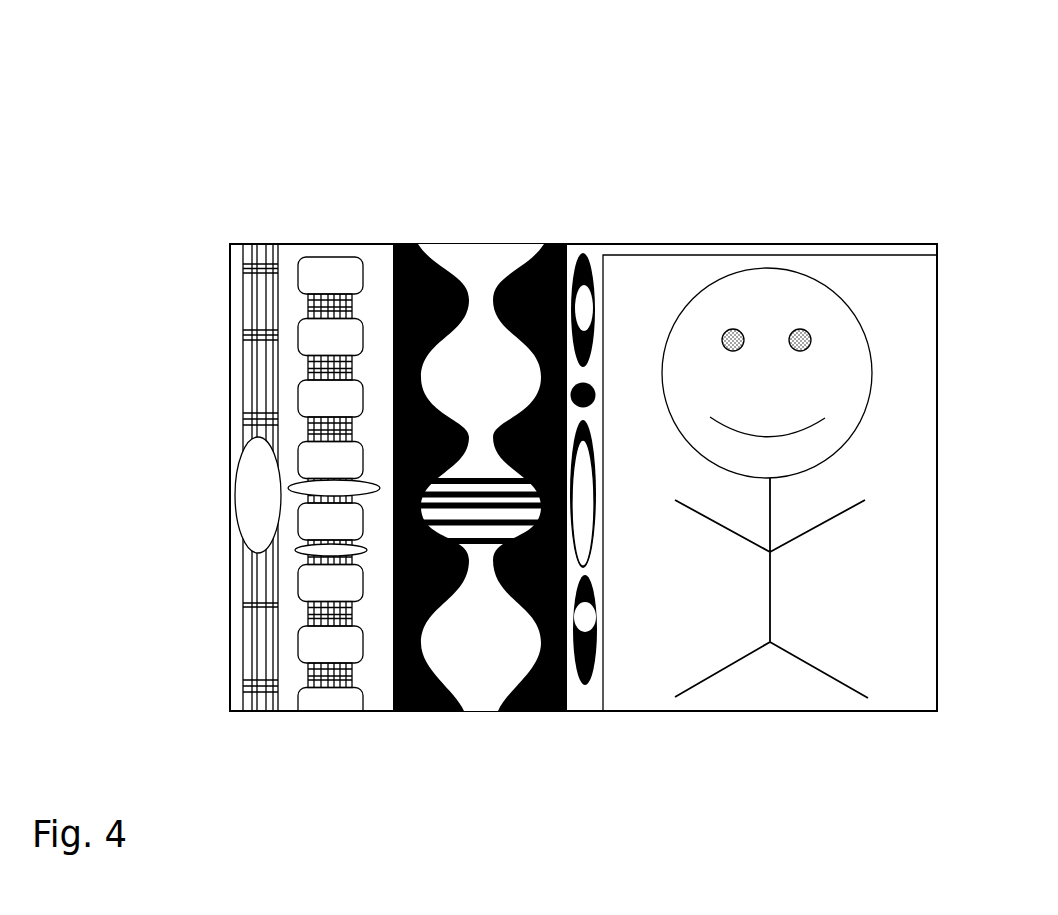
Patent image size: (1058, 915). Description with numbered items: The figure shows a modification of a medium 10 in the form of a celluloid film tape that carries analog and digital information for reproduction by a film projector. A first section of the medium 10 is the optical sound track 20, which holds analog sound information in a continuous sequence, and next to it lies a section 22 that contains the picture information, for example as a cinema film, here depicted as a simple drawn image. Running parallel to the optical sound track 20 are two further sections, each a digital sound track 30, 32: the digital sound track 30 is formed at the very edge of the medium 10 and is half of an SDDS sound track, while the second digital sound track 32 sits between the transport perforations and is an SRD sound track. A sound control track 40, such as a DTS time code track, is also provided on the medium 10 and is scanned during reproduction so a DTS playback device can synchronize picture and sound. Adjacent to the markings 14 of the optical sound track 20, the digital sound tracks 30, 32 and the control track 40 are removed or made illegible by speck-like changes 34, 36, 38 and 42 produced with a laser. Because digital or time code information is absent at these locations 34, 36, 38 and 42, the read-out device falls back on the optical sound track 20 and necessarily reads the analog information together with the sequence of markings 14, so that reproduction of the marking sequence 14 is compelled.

The medium 10 is at (380, 255).
The markings 14 is at (492, 557).
The optical sound track 20 is at (475, 257).
The section 22 is at (873, 280).
The digital sound track 30 is at (247, 246).
The digital sound track 32 is at (320, 305).
The speck-like change 34 is at (247, 492).
The speck-like change 36 is at (307, 483).
The speck-like change 38 is at (302, 548).
The sound control track 40 is at (583, 257).
The speck-like change 42 is at (583, 522).